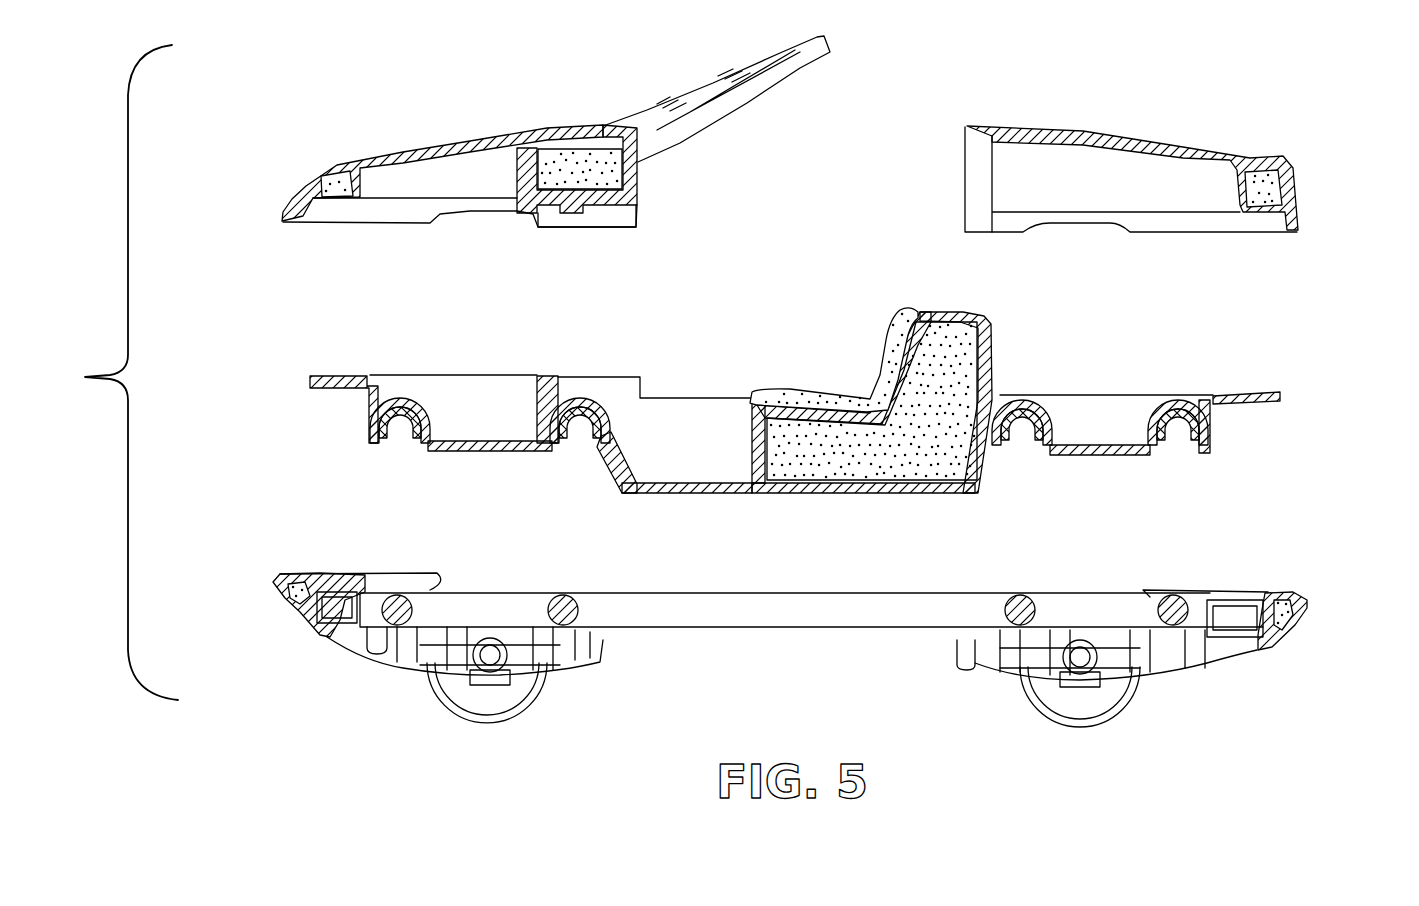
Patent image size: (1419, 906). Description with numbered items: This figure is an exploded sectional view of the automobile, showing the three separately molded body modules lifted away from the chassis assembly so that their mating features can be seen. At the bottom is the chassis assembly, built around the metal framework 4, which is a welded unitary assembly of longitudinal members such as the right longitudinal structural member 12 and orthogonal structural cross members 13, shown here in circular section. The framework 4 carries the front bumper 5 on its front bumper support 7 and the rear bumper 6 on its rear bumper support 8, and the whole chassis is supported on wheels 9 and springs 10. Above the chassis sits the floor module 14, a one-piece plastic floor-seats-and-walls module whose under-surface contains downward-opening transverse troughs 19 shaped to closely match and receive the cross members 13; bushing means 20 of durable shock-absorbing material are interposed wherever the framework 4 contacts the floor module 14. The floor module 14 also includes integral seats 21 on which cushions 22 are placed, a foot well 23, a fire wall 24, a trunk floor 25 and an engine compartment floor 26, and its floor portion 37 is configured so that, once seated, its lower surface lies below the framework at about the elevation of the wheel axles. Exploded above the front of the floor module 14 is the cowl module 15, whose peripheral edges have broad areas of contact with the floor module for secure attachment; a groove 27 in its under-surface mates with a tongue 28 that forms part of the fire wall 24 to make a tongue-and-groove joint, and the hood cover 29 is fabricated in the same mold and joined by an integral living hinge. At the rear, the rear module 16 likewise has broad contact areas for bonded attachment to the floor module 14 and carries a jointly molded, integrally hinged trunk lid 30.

The metal framework 4 is at (720, 632).
The front bumper 5 is at (297, 612).
The rear bumper 6 is at (1310, 610).
The front bumper support 7 is at (347, 625).
The rear bumper support 8 is at (1217, 670).
The wheels 9 is at (450, 708).
The springs 10 is at (593, 668).
The right longitudinal structural member 12 is at (752, 624).
The structural cross members 13 is at (417, 597).
The floor module 14 is at (280, 410).
The cowl module 15 is at (250, 199).
The rear module 16 is at (1313, 197).
The transverse troughs 19 is at (397, 432).
The bushing means 20 is at (403, 420).
The integral seats 21 is at (752, 447).
The cushions 22 is at (807, 390).
The foot well 23 is at (709, 453).
The fire wall 24 is at (620, 444).
The trunk floor 25 is at (1113, 443).
The engine compartment floor 26 is at (500, 437).
The groove 27 is at (550, 210).
The tongue 28 is at (547, 375).
The hood cover 29 is at (443, 147).
The trunk lid 30 is at (1113, 137).
The floor portion 37 is at (947, 492).